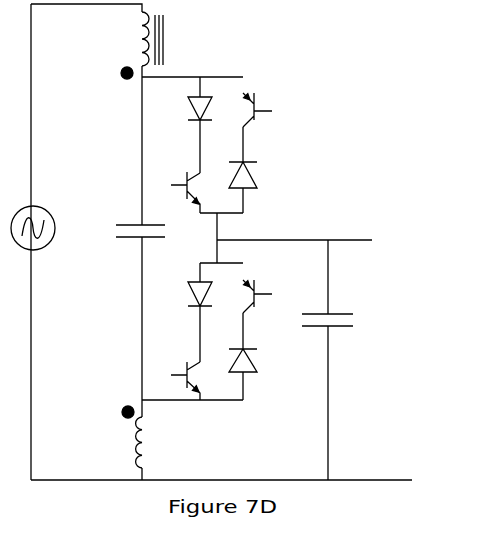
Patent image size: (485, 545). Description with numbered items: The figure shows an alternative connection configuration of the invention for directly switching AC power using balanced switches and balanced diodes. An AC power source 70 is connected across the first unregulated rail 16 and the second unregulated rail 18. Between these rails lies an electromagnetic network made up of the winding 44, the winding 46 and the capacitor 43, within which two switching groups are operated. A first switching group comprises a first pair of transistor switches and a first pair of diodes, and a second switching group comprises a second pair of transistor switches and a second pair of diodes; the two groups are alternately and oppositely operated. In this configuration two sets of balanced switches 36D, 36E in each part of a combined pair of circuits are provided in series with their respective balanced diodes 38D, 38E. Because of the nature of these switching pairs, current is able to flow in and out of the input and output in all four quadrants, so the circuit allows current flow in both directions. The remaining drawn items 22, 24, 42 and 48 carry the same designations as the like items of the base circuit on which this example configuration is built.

The first unregulated rail 16 is at (92, 5).
The second unregulated rail 18 is at (113, 478).
The output line 22 is at (358, 240).
The output return line 24 is at (357, 479).
The balanced switch 36D is at (188, 182).
The balanced switch 36E is at (257, 107).
The balanced diode 38D is at (195, 102).
The balanced diode 38E is at (245, 176).
The output capacitor 42 is at (327, 327).
The capacitor 43 is at (141, 225).
The winding 44 is at (144, 41).
The winding 46 is at (144, 428).
The transformer core 48 is at (167, 40).
The AC power source 70 is at (43, 232).